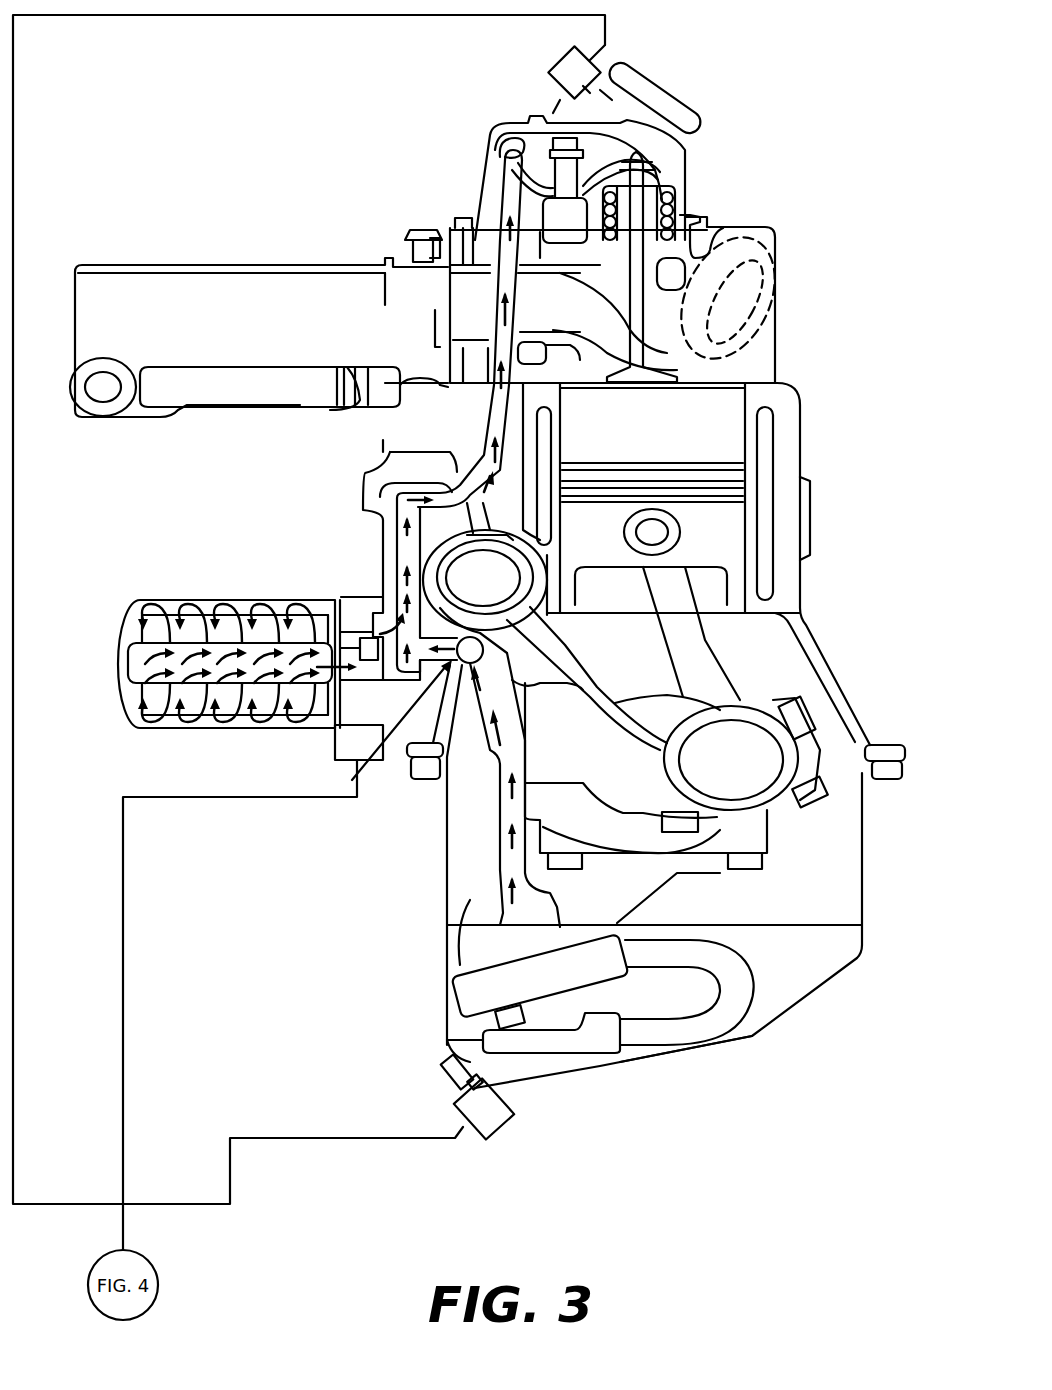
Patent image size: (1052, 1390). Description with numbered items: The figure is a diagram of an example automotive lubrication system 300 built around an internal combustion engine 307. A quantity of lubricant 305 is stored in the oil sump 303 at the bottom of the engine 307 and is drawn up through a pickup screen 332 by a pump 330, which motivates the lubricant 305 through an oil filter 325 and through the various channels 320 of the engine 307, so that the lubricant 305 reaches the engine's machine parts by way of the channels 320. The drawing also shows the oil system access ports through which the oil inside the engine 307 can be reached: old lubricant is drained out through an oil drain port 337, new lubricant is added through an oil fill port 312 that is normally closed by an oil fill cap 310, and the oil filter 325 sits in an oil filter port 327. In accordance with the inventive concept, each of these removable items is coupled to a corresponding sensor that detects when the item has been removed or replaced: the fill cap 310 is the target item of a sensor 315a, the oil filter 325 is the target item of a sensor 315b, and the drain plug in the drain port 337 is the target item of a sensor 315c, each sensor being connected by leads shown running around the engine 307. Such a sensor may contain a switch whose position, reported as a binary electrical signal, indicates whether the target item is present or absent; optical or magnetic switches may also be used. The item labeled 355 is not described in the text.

The automotive lubrication system 300 is at (878, 205).
The oil sump 303 is at (800, 1012).
The lubricant 305 is at (845, 948).
The engine 307 is at (838, 440).
The oil fill cap 310 is at (692, 92).
The oil fill port 312 is at (690, 130).
The sensor 315a is at (547, 86).
The sensor 315b is at (343, 742).
The sensor 315c is at (505, 1118).
The channels 320 is at (363, 471).
The oil filter 325 is at (265, 598).
The oil filter port 327 is at (352, 640).
The pump 330 is at (450, 942).
The pickup screen 332 is at (458, 1008).
The oil drain port 337 is at (492, 1043).
The drain plug sensor 355 is at (440, 1087).